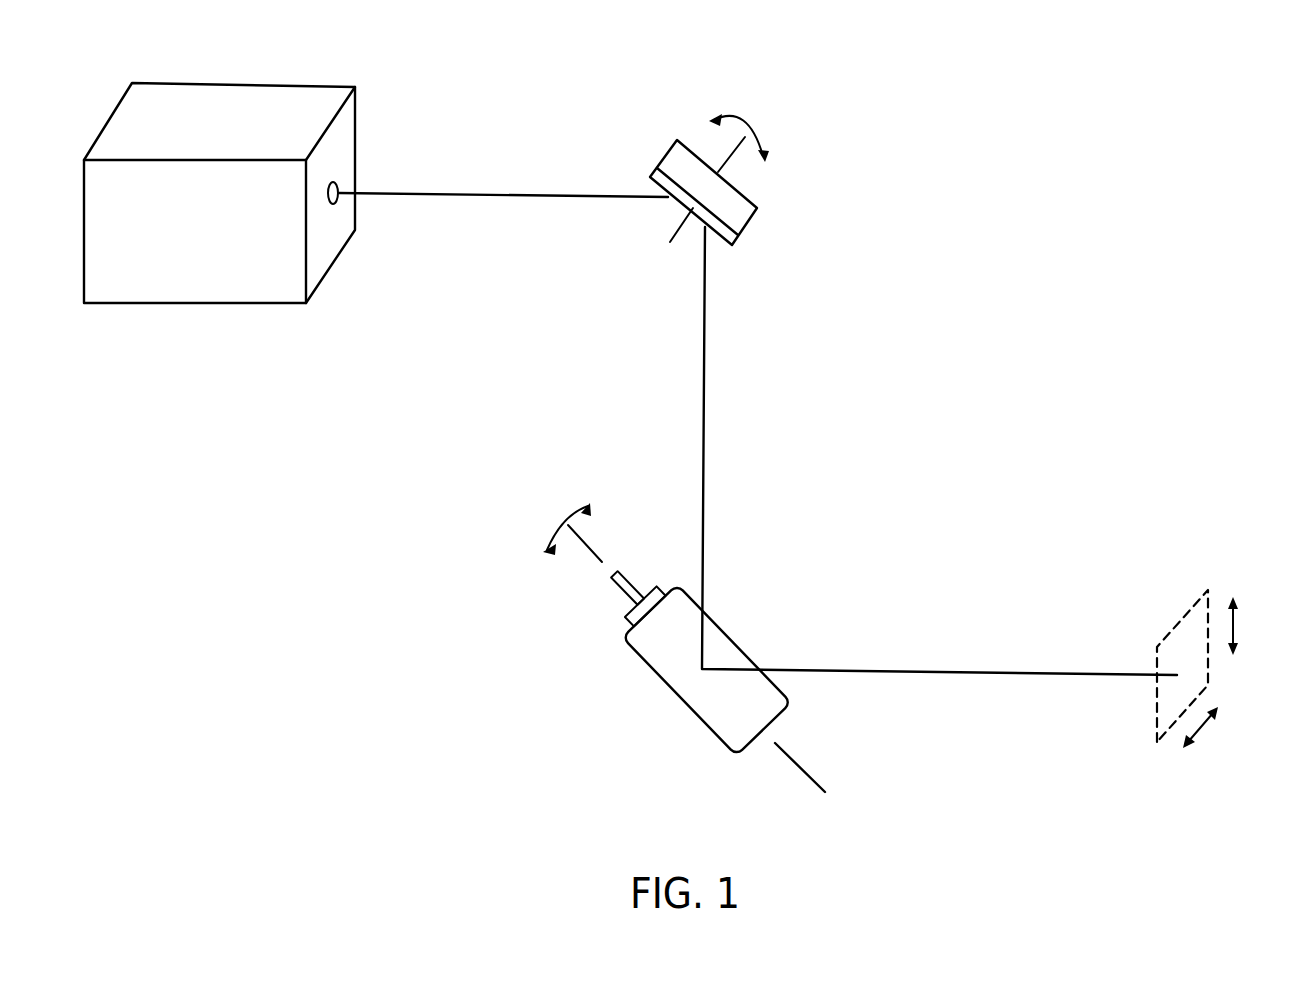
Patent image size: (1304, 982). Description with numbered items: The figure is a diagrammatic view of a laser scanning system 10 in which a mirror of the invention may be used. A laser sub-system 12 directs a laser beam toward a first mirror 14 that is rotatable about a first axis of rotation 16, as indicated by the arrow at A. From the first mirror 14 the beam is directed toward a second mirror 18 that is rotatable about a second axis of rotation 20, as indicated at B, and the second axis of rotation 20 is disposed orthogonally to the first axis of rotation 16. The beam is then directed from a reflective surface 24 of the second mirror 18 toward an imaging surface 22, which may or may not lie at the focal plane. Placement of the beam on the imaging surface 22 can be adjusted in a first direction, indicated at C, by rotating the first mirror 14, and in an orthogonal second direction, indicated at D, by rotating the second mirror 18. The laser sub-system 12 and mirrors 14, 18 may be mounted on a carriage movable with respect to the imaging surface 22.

The laser scanning system 10 is at (1046, 166).
The laser sub-system 12 is at (277, 95).
The first mirror 14 is at (737, 215).
The first axis of rotation 16 is at (669, 239).
The second mirror 18 is at (630, 653).
The second axis of rotation 20 is at (813, 774).
The imaging surface 22 is at (1182, 618).
The reflective surface 24 is at (710, 723).